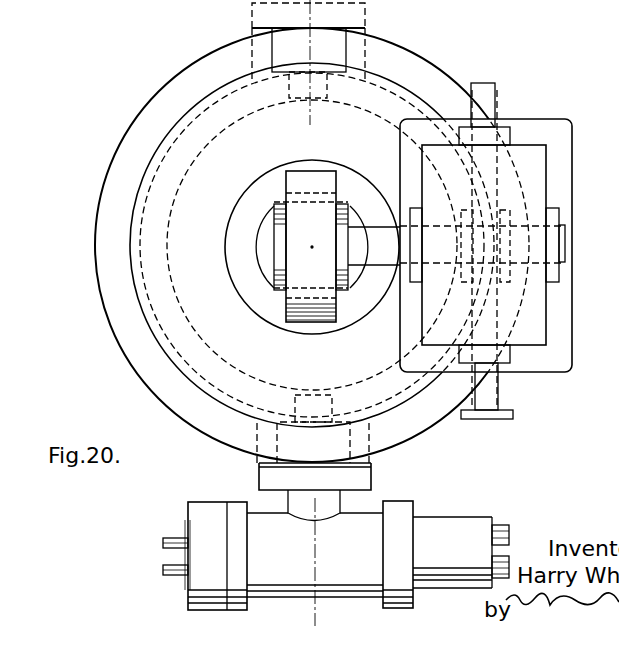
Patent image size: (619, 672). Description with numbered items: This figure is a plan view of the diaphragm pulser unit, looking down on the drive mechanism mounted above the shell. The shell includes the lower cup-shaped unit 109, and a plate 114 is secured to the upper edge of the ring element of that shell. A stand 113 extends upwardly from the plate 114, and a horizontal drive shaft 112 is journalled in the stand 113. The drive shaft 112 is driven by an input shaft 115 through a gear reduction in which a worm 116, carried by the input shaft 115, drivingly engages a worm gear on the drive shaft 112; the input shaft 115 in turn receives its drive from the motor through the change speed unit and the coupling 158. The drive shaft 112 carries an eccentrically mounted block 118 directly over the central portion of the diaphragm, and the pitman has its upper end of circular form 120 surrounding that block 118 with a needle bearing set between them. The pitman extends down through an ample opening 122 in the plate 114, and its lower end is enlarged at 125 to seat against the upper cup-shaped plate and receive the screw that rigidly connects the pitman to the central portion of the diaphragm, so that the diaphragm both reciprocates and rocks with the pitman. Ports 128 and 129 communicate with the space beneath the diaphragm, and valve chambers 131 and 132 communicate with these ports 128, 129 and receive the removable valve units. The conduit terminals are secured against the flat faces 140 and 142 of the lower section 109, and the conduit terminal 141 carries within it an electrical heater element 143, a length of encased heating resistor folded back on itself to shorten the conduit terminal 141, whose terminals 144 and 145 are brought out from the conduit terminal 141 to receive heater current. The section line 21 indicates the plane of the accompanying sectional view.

The section line 21 is at (288, 611).
The lower cup-shaped unit 109 is at (120, 0).
The drive shaft 112 is at (372, 245).
The stand 113 is at (548, 160).
The plate 114 is at (204, 125).
The input shaft 115 is at (490, 100).
The worm 116 is at (510, 215).
The eccentrically mounted block 118 is at (280, 247).
The circular upper end of pitman 120 is at (297, 185).
The opening 122 is at (232, 212).
The enlarged lower end of pitman 125 is at (269, 275).
The port 128 is at (327, 88).
The port 129 is at (295, 412).
The valve chamber 131 is at (346, 52).
The valve chamber 132 is at (352, 438).
The face 140 is at (355, 31).
The conduit terminal 141 is at (355, 486).
The face 142 is at (371, 466).
The electrical heater element 143 is at (500, 568).
The terminal 144 is at (163, 542).
The terminal 145 is at (163, 570).
The coupling 158 is at (513, 418).